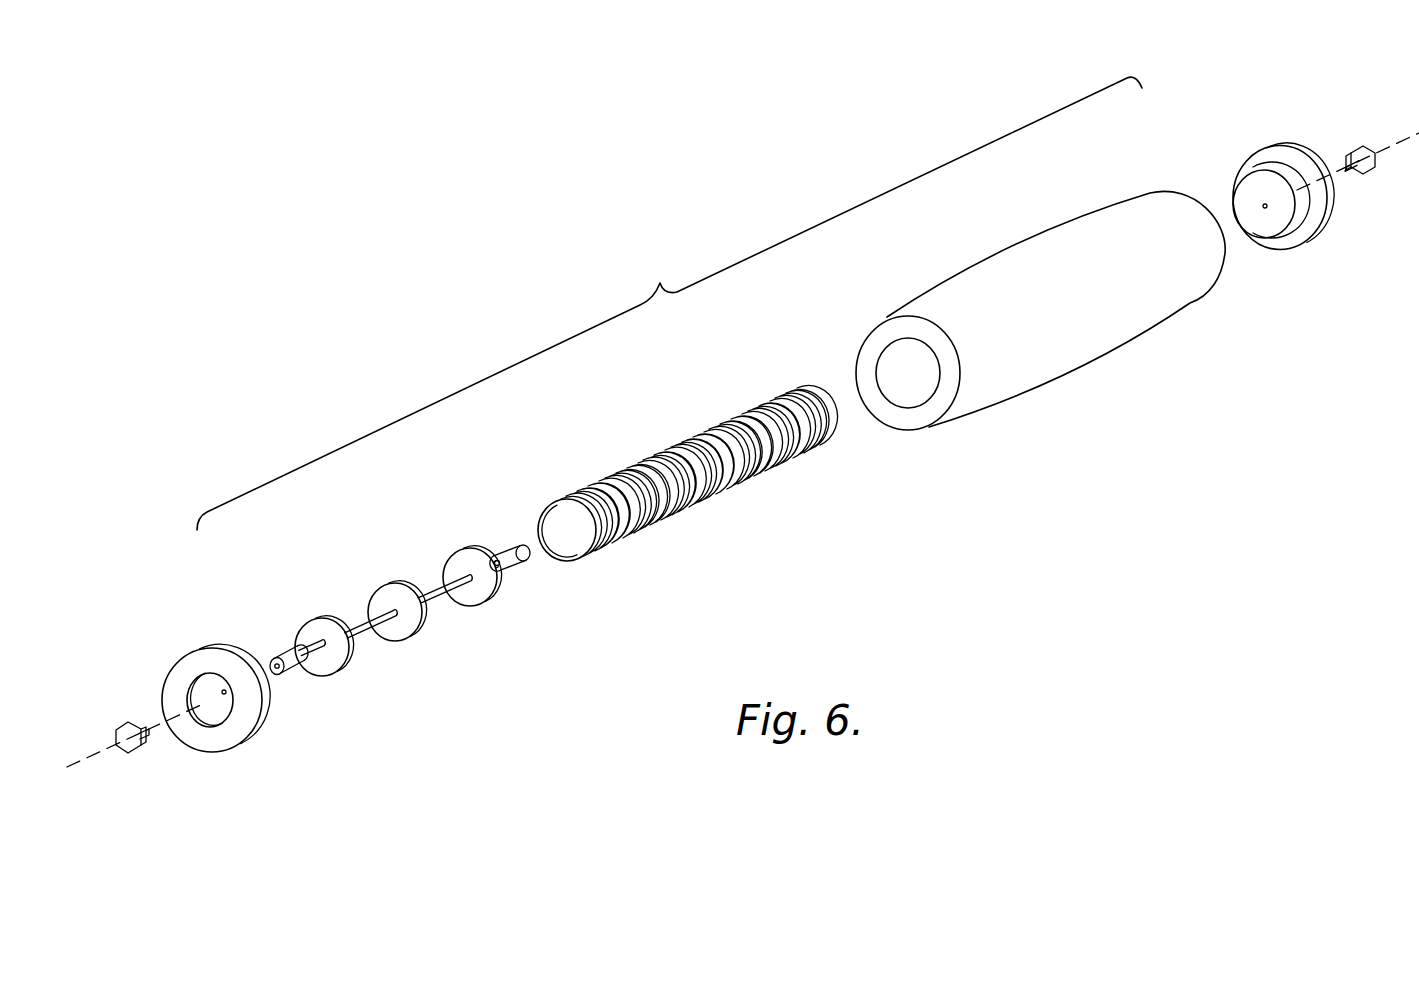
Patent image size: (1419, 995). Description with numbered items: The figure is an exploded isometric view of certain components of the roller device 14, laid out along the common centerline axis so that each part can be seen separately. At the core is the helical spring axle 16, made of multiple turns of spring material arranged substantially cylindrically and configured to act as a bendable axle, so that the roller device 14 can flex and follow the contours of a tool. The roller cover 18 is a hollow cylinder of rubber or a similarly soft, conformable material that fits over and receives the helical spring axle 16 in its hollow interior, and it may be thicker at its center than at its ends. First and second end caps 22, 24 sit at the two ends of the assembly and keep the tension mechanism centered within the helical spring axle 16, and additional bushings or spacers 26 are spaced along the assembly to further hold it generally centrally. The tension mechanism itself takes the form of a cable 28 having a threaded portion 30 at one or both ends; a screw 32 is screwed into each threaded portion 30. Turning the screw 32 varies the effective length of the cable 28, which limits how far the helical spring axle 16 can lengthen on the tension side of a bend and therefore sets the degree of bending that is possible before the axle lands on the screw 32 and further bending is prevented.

The roller device 14 is at (669, 303).
The helical spring axle 16 is at (714, 512).
The roller cover 18 is at (1088, 343).
The first end cap 22 is at (1257, 153).
The second end cap 24 is at (242, 723).
The bushings or spacers 26 is at (396, 592).
The cable 28 is at (353, 622).
The threaded portion 30 is at (281, 657).
The screw 32 is at (133, 753).